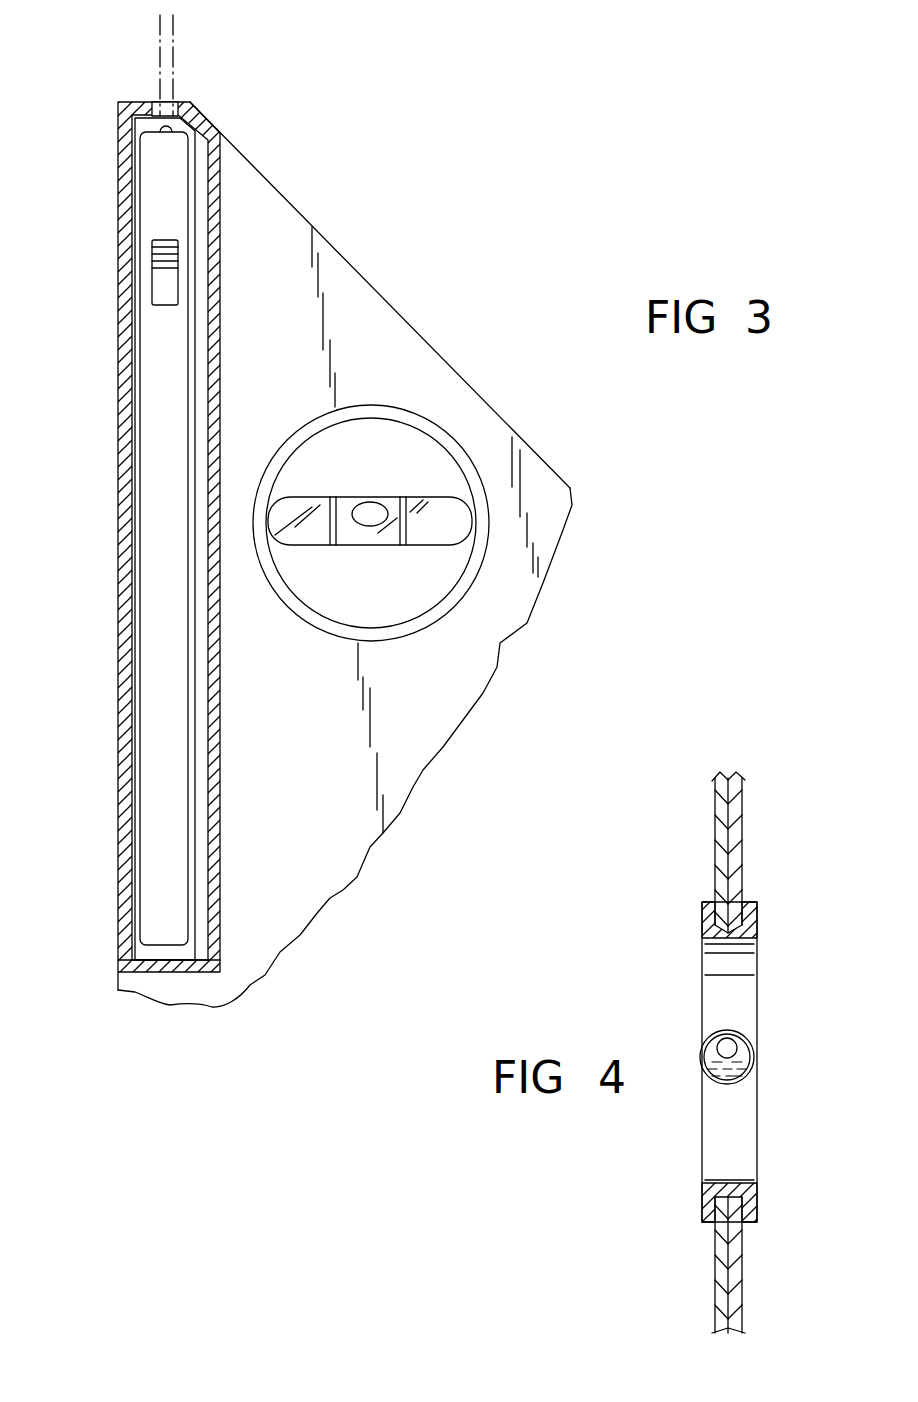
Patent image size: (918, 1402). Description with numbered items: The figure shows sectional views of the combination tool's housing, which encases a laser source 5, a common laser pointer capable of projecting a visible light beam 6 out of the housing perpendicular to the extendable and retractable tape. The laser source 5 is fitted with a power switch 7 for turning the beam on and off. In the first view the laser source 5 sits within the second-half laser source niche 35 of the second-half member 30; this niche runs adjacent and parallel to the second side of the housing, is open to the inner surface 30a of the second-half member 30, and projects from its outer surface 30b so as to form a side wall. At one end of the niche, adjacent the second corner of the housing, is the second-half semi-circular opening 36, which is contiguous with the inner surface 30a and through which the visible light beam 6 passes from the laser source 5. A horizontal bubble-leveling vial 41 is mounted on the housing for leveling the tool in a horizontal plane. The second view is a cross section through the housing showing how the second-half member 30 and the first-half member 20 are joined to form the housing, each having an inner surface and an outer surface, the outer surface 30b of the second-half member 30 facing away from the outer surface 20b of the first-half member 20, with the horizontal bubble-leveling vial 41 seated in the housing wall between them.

In FIG. 3, the laser source 5 is at (160, 473).
In FIG. 3, the visible light beam 6 is at (168, 42).
In FIG. 3, the power switch 7 is at (160, 258).
In FIG. 3, the second-half laser source niche 35 is at (150, 952).
In FIG. 3, the second-half semi-circular opening 36 is at (172, 98).
In FIG. 3, the second-half member 30 is at (395, 311).
In FIG. 4, the second-half member 30 is at (666, 1052).
In FIG. 3, the inner surface 30a is at (540, 505).
In FIG. 4, the outer surface 30b is at (715, 822).
In FIG. 4, the first-half member 20 is at (795, 1052).
In FIG. 4, the outer surface 20b is at (742, 822).
In FIG. 3, the horizontal bubble-leveling vial 41 is at (437, 505).
In FIG. 4, the horizontal bubble-leveling vial 41 is at (753, 1047).